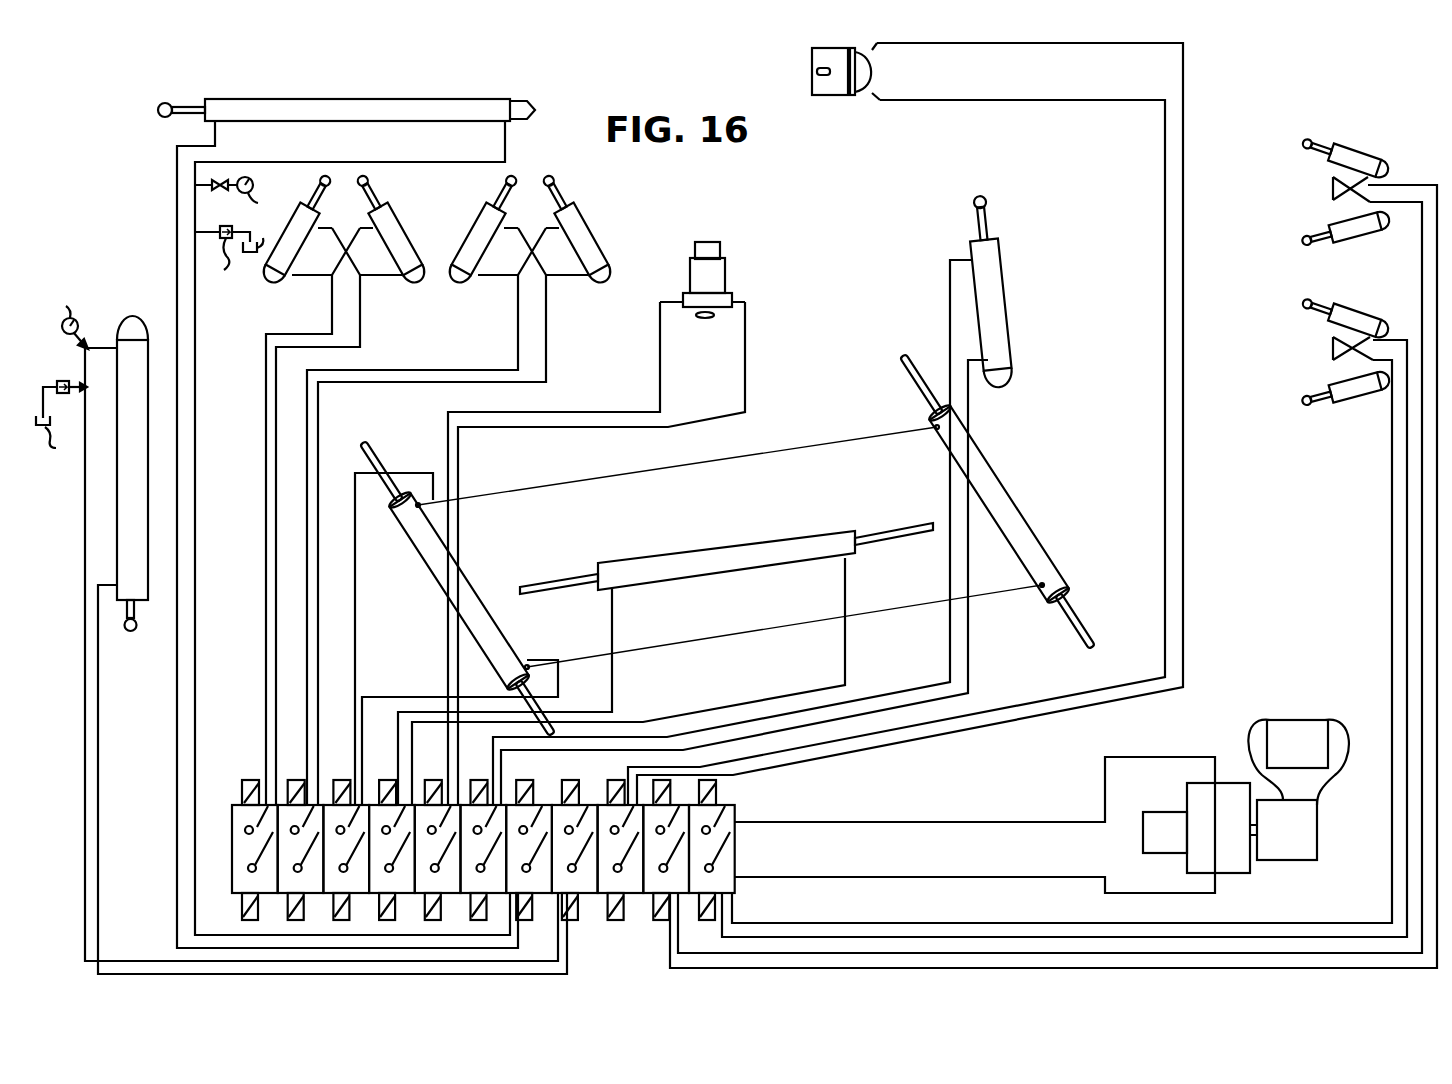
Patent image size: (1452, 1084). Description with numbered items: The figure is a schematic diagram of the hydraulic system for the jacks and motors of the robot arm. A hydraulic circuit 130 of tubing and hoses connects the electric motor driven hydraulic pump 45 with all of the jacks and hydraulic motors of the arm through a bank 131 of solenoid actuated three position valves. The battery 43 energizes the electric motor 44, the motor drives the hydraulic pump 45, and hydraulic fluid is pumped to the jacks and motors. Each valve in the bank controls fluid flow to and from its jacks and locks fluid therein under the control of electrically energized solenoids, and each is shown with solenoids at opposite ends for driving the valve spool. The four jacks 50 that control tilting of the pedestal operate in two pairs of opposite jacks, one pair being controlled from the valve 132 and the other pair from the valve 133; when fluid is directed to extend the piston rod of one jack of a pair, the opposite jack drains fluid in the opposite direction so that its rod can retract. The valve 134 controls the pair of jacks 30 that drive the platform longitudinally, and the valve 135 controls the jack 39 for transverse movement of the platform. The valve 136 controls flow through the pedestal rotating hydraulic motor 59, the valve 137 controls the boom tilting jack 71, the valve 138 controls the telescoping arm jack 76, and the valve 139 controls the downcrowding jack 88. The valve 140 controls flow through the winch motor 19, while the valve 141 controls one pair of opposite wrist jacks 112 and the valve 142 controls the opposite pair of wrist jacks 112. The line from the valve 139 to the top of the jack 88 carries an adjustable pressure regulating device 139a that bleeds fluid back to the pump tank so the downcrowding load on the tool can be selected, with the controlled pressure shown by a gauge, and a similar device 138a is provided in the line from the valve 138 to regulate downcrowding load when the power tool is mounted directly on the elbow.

The winch motor 19 is at (863, 100).
The jacks 30 is at (470, 597).
The jack 39 is at (688, 557).
The battery 43 is at (1298, 762).
The electric motor 44 is at (1287, 830).
The hydraulic pump 45 is at (996, 825).
The jacks 50 is at (367, 222).
The pedestal rotating hydraulic motor 59 is at (723, 263).
The boom tilting jack 71 is at (1003, 315).
The telescoping arm jack 76 is at (399, 99).
The downcrowding jack 88 is at (118, 350).
The wrist jacks 112 is at (1335, 228).
The hydraulic circuit 130 is at (1193, 93).
The bank of solenoid actuated three position valves 131 is at (737, 798).
The valve 132 is at (239, 812).
The valve 133 is at (284, 812).
The valve 134 is at (330, 812).
The valve 135 is at (376, 812).
The valve 136 is at (422, 812).
The valve 137 is at (468, 812).
The valve 138 is at (516, 812).
The pressure regulating device 138a is at (235, 234).
The valve 139 is at (574, 812).
The adjustable pressure regulating device 139a is at (62, 373).
The valve 140 is at (604, 800).
The valve 141 is at (678, 813).
The valve 142 is at (728, 820).